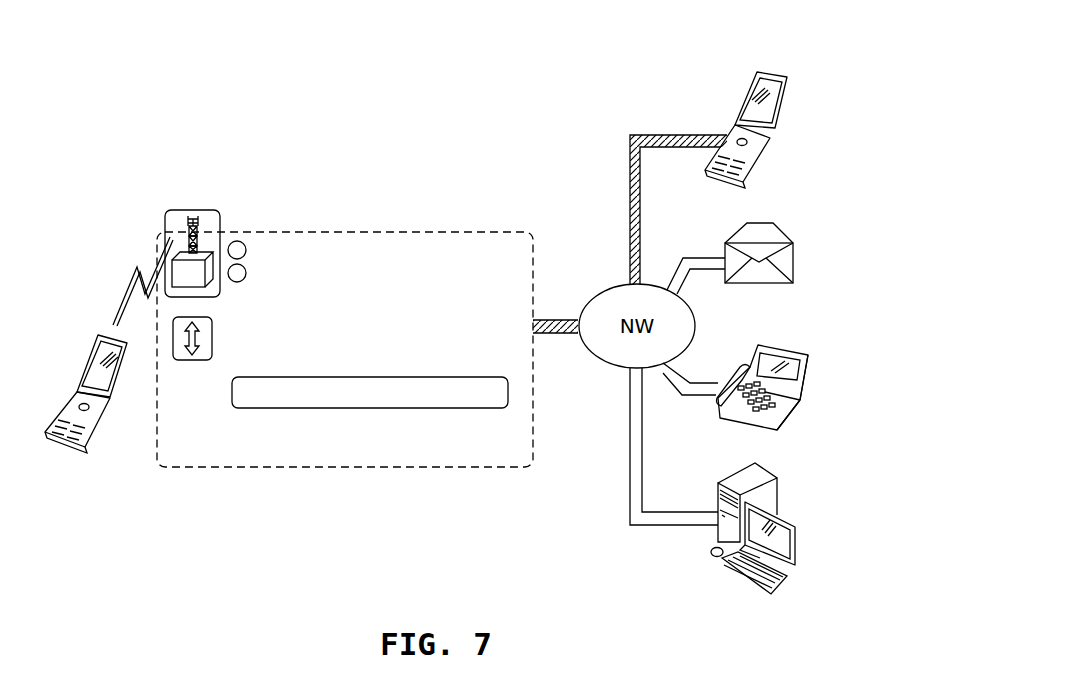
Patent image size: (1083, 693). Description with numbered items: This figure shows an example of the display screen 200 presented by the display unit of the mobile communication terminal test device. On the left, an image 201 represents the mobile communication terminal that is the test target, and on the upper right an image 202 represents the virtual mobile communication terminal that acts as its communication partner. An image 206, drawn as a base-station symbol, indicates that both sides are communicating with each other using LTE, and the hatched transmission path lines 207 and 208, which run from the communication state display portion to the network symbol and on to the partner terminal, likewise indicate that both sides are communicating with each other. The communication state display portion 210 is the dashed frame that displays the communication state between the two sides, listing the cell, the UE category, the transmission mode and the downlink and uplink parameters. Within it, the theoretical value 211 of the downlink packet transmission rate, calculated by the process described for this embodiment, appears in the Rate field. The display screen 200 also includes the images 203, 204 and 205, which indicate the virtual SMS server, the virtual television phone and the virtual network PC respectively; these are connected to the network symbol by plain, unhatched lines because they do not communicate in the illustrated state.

The display screen 200 is at (266, 58).
The image indicating the mobile communication terminal 201 is at (85, 356).
The image indicating the virtual mobile communication terminal 202 is at (747, 95).
The image indicating the virtual SMS server 203 is at (727, 238).
The image indicating the virtual television phone 204 is at (740, 368).
The image indicating the virtual network PC 205 is at (732, 478).
The image indicating LTE communication 206 is at (208, 210).
The hatched transmission path line 207 is at (556, 316).
The hatched transmission path line 208 is at (630, 176).
The communication state display portion 210 is at (378, 230).
The theoretical value of the packet transmission rate 211 is at (232, 392).